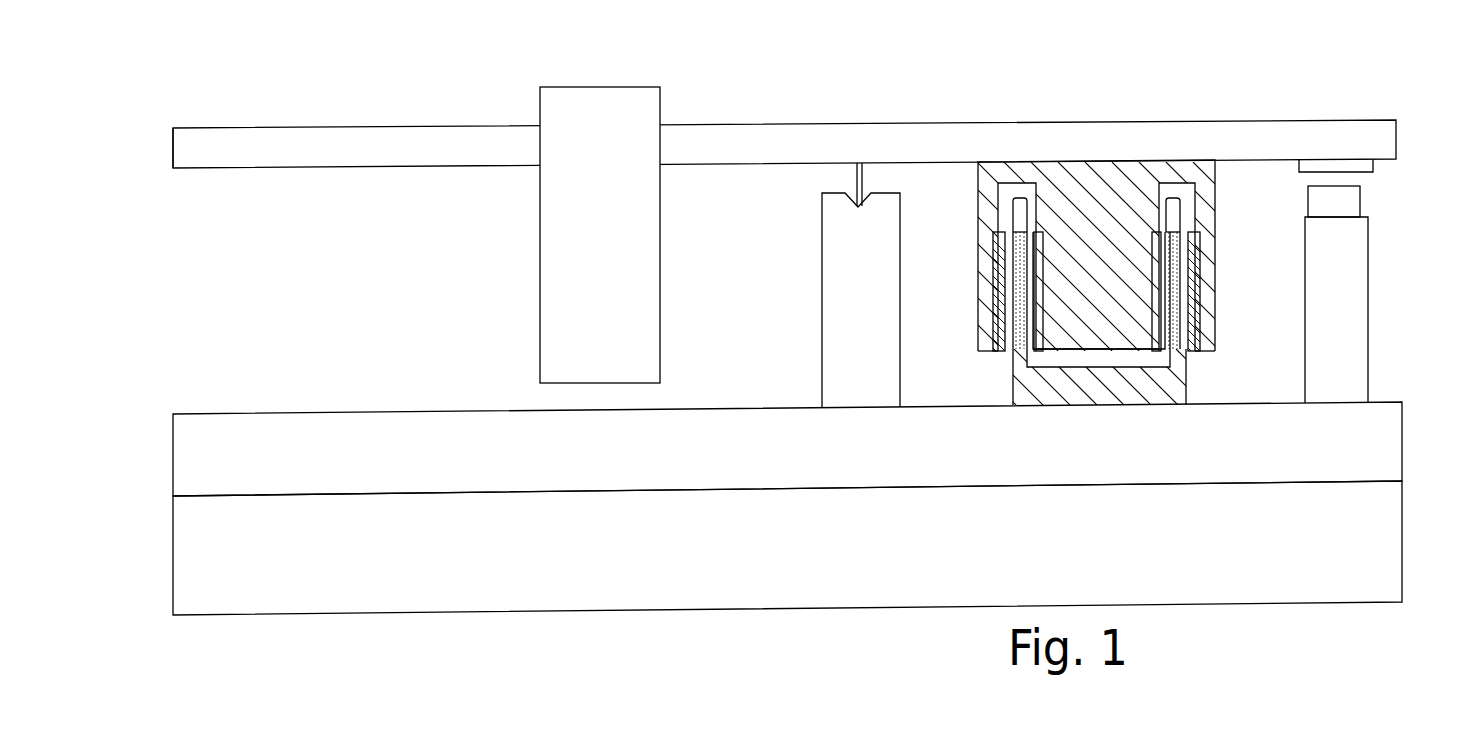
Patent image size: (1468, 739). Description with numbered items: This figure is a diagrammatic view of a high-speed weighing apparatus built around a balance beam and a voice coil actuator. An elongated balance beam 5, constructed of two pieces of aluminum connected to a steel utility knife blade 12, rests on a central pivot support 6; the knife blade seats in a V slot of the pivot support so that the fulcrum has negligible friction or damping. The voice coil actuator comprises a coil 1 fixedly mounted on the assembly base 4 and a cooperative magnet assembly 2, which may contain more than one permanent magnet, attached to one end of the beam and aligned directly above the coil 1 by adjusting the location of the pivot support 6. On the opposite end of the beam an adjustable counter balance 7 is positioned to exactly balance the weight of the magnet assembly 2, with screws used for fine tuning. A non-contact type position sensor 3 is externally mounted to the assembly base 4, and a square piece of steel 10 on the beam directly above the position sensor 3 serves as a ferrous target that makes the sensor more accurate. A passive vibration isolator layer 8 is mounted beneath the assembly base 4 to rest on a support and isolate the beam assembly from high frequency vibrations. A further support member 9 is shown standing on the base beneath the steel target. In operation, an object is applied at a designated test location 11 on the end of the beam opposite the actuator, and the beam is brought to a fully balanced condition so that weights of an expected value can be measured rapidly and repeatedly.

The coil 1 is at (1125, 407).
The magnet assembly 2 is at (1139, 156).
The position sensor 3 is at (1368, 285).
The assembly base 4 is at (632, 472).
The balance beam 5 is at (348, 157).
The pivot support 6 is at (848, 212).
The counter balance 7 is at (618, 265).
The passive vibration isolator layer 8 is at (490, 576).
The spacer 9 is at (1360, 205).
The square piece of 4140 steel 10 is at (1373, 168).
The designated test location 11 is at (207, 128).
The utility knife blade 12 is at (850, 163).